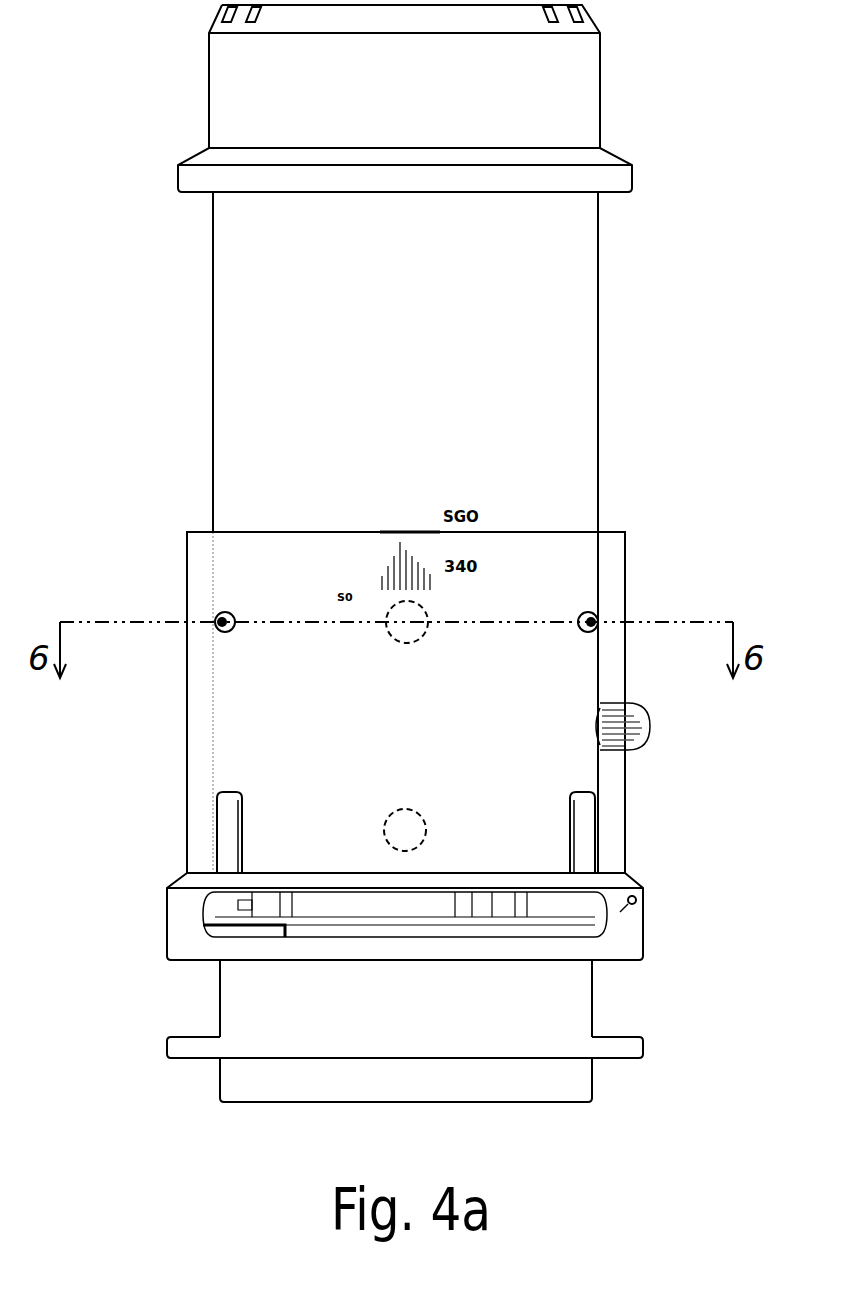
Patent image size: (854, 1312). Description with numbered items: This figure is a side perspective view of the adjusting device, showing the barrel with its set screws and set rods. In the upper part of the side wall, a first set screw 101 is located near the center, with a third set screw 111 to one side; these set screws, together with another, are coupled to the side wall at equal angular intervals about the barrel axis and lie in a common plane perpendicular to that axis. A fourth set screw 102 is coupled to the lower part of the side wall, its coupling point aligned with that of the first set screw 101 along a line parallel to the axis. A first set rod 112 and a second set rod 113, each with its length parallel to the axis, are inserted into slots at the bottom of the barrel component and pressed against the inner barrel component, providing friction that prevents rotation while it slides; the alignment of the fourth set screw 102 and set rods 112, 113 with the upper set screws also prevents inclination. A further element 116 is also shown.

The first set screw 101 is at (418, 612).
The fourth set screw 102 is at (405, 833).
The third set screw 111 is at (586, 618).
The first set rod 112 is at (228, 815).
The second set rod 113 is at (580, 822).
The left fastener hole 116 is at (226, 618).